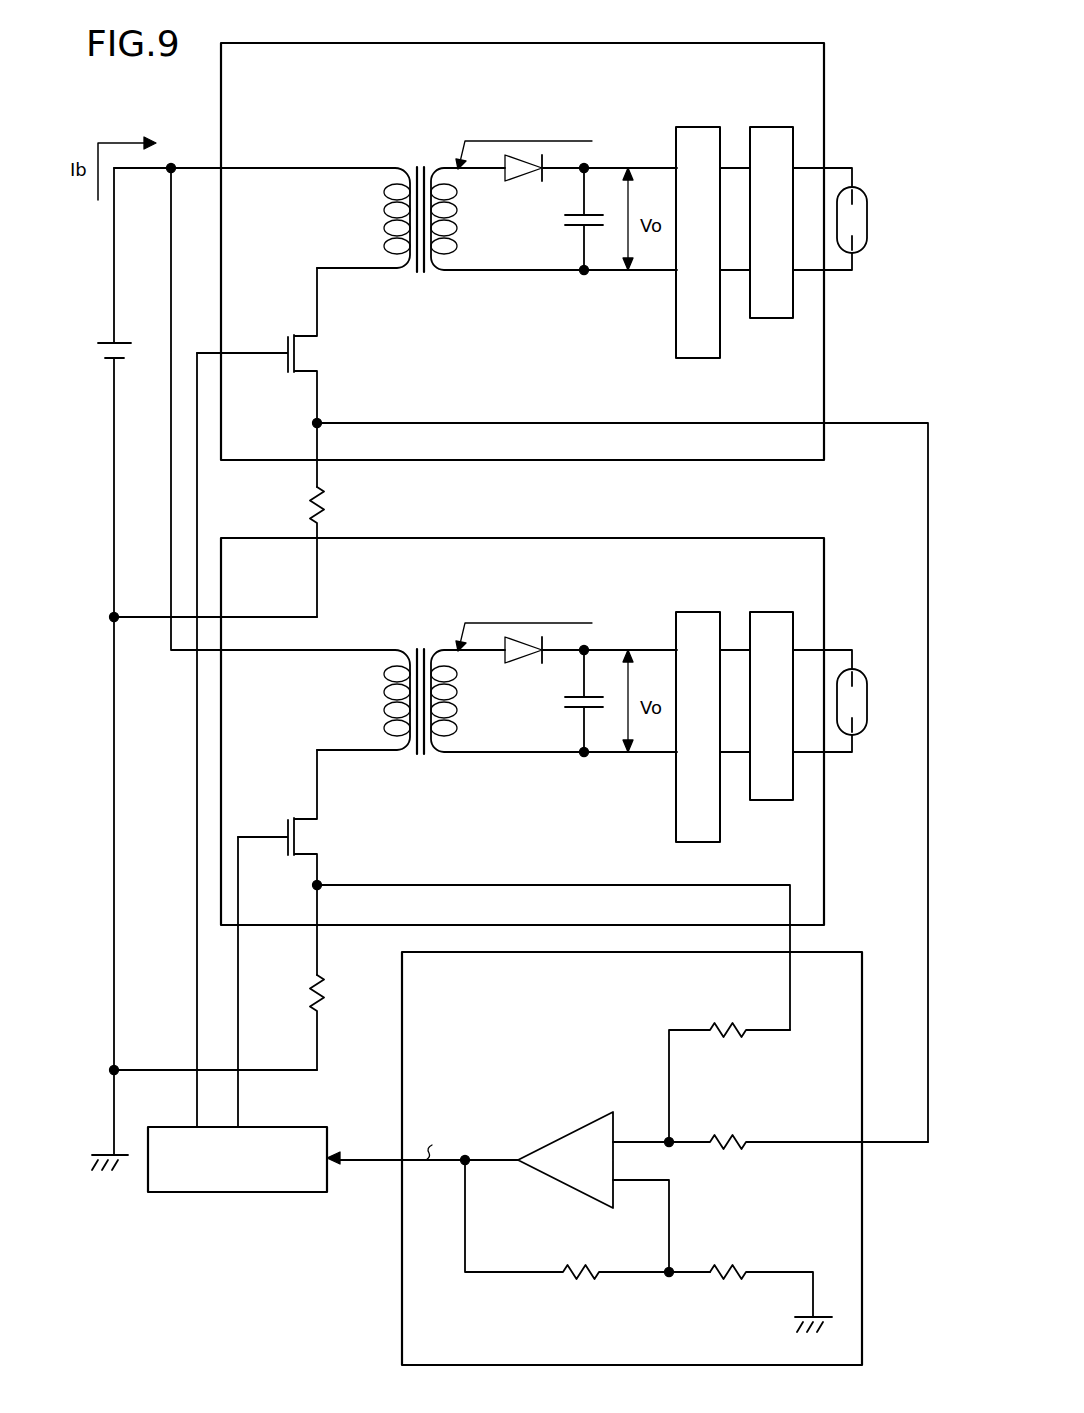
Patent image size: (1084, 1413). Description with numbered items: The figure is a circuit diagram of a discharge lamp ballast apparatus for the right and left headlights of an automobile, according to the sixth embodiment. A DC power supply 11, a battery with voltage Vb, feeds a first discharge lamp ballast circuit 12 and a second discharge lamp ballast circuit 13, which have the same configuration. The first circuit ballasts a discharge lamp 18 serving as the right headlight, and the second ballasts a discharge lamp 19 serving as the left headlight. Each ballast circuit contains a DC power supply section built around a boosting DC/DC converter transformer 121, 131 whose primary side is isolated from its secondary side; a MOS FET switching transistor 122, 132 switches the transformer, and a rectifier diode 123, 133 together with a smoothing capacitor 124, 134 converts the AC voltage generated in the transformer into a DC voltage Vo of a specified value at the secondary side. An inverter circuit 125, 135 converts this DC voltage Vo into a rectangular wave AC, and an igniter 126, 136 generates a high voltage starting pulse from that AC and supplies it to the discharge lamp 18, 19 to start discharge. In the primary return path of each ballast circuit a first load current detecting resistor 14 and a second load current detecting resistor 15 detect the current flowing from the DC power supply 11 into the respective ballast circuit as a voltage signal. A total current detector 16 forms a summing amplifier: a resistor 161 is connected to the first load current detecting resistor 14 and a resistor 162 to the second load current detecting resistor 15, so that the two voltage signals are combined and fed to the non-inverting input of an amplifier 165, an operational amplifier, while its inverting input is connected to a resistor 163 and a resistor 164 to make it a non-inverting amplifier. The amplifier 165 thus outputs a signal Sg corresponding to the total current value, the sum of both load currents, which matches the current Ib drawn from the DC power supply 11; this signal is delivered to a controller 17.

The DC power supply 11 is at (125, 338).
The first discharge lamp ballast circuit 12 is at (580, 42).
The second discharge lamp ballast circuit 13 is at (580, 537).
The first load current detecting resistor 14 is at (315, 552).
The second load current detecting resistor 15 is at (315, 1022).
The total current detector 16 is at (607, 1158).
The controller 17 is at (240, 1192).
The discharge lamp 18 is at (867, 205).
The discharge lamp 19 is at (867, 687).
The boosting DC/DC converter transformer 121 is at (417, 160).
The MOS FET switching transistor 122 is at (285, 377).
The rectifier diode 123 is at (515, 182).
The smoothing capacitor 124 is at (572, 230).
The inverter circuit 125 is at (695, 127).
The igniter 126 is at (767, 127).
The boosting DC/DC converter transformer 131 is at (417, 642).
The MOS FET switching transistor 132 is at (305, 862).
The rectifier diode 133 is at (515, 664).
The smoothing capacitor 134 is at (572, 712).
The inverter circuit 135 is at (695, 612).
The igniter 136 is at (767, 612).
The resistor 161 is at (730, 1129).
The resistor 162 is at (730, 1016).
The resistor 163 is at (581, 1259).
The resistor 164 is at (728, 1259).
The amplifier 165 is at (555, 1134).